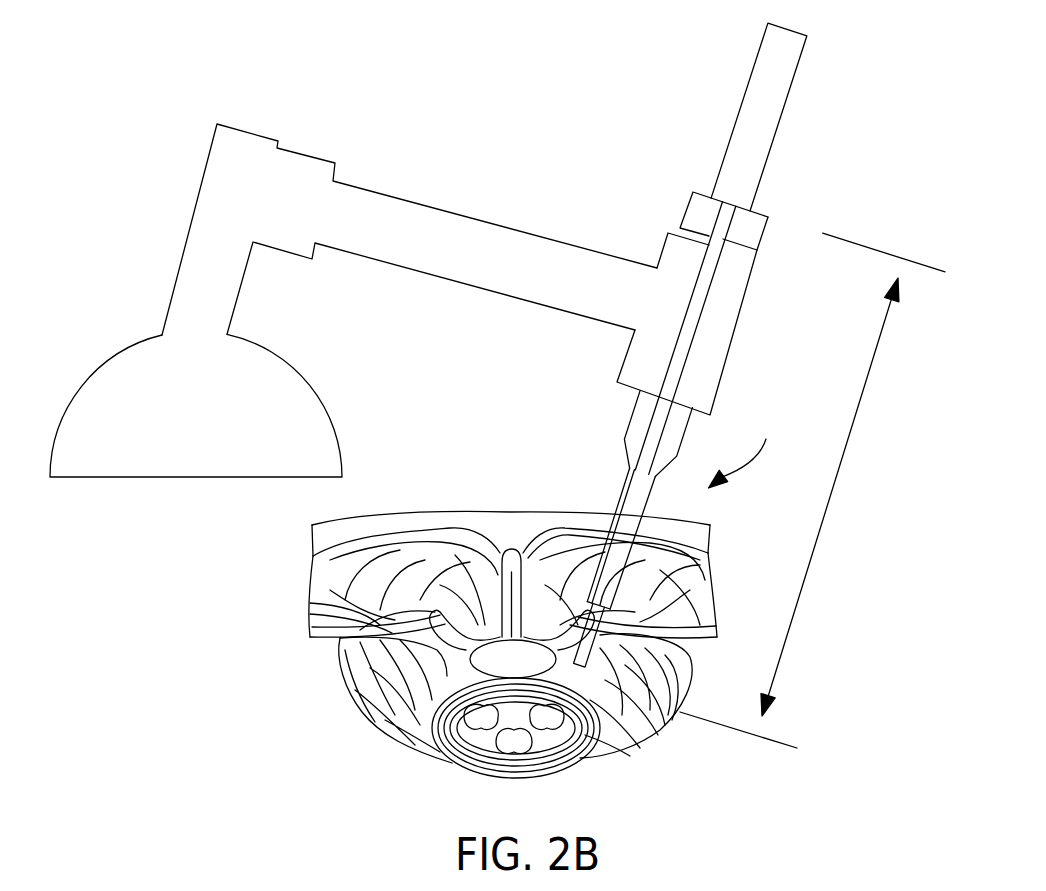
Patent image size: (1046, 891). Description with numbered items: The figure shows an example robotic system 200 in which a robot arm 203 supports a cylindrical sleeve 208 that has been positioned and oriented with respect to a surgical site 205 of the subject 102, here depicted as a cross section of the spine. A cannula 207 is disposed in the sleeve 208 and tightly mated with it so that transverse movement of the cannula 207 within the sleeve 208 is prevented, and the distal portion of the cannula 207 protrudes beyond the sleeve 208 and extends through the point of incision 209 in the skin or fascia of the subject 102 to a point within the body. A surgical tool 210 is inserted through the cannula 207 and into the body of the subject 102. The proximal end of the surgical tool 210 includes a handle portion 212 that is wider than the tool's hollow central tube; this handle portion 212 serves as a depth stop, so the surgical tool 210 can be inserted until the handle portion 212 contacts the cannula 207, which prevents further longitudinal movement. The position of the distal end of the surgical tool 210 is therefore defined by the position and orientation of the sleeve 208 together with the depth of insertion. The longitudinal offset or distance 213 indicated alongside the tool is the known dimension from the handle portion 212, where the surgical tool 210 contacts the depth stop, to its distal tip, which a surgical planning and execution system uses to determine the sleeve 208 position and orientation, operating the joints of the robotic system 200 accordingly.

The subject 102 is at (312, 596).
The robotic system 200 is at (130, 344).
The robot arm 203 is at (513, 229).
The surgical site 205 is at (747, 446).
The cannula 207 is at (688, 207).
The cylindrical sleeve 208 is at (741, 329).
The point of incision 209 is at (615, 508).
The surgical tool 210 is at (727, 240).
The handle portion 212 is at (742, 100).
The longitudinal offset or distance 213 is at (837, 470).